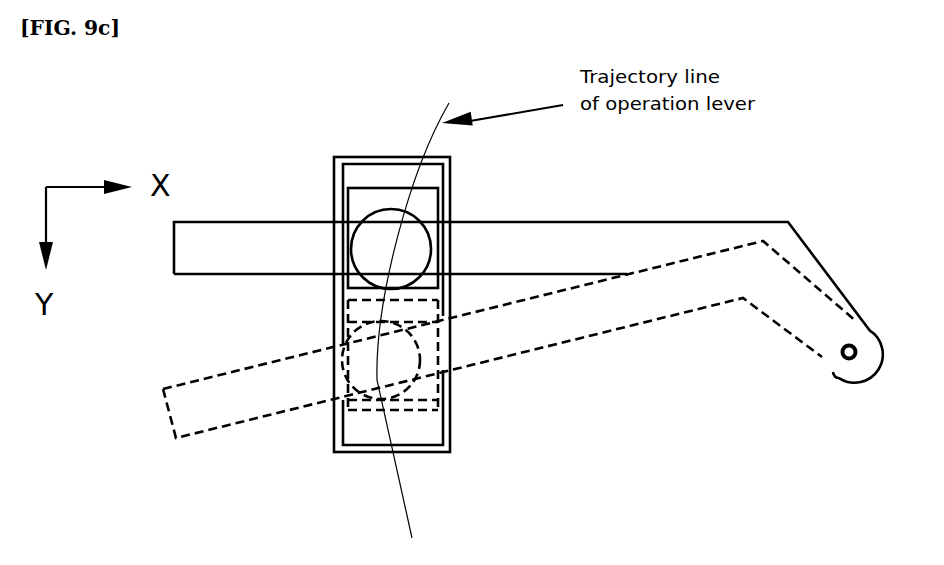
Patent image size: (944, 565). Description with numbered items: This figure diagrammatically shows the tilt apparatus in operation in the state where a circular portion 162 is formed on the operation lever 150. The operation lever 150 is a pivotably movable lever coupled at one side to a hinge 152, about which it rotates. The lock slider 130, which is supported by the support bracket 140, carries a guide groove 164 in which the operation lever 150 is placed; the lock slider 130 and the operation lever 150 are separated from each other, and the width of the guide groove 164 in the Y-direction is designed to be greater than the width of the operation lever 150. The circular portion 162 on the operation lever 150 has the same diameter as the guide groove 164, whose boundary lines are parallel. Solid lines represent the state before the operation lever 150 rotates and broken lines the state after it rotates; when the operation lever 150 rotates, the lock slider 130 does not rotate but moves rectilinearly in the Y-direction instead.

The lock slider 130 is at (372, 198).
The support bracket 140 is at (450, 395).
The operation lever 150 is at (263, 241).
The hinge 152 is at (843, 352).
The circular portion 162 is at (380, 255).
The guide groove 164 is at (428, 215).